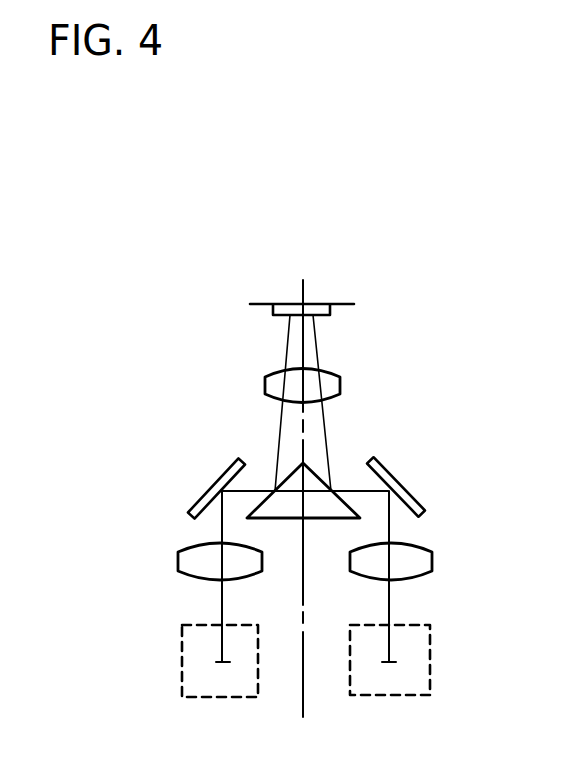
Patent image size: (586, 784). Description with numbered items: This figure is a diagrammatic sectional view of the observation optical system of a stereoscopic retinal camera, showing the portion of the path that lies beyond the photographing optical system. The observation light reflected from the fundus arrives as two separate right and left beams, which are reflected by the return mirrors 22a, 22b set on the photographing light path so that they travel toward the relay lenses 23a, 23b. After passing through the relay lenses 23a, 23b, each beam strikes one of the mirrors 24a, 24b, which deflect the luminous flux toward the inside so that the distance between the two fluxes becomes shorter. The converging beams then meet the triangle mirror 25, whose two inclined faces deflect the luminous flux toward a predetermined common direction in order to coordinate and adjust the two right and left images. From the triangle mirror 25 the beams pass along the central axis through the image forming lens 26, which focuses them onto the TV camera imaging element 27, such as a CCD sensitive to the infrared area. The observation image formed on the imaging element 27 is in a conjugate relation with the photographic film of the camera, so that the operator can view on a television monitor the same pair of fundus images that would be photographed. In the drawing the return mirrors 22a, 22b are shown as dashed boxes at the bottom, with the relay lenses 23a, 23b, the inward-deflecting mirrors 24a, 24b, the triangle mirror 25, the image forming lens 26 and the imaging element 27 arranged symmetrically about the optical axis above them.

The return mirror 22a is at (430, 653).
The return mirror 22b is at (182, 645).
The relay lens 23a is at (422, 562).
The relay lens 23b is at (192, 560).
The mirror 24a is at (410, 498).
The mirror 24b is at (193, 503).
The triangle mirror 25 is at (318, 490).
The image forming lens 26 is at (272, 382).
The TV camera imaging element 27 is at (318, 308).